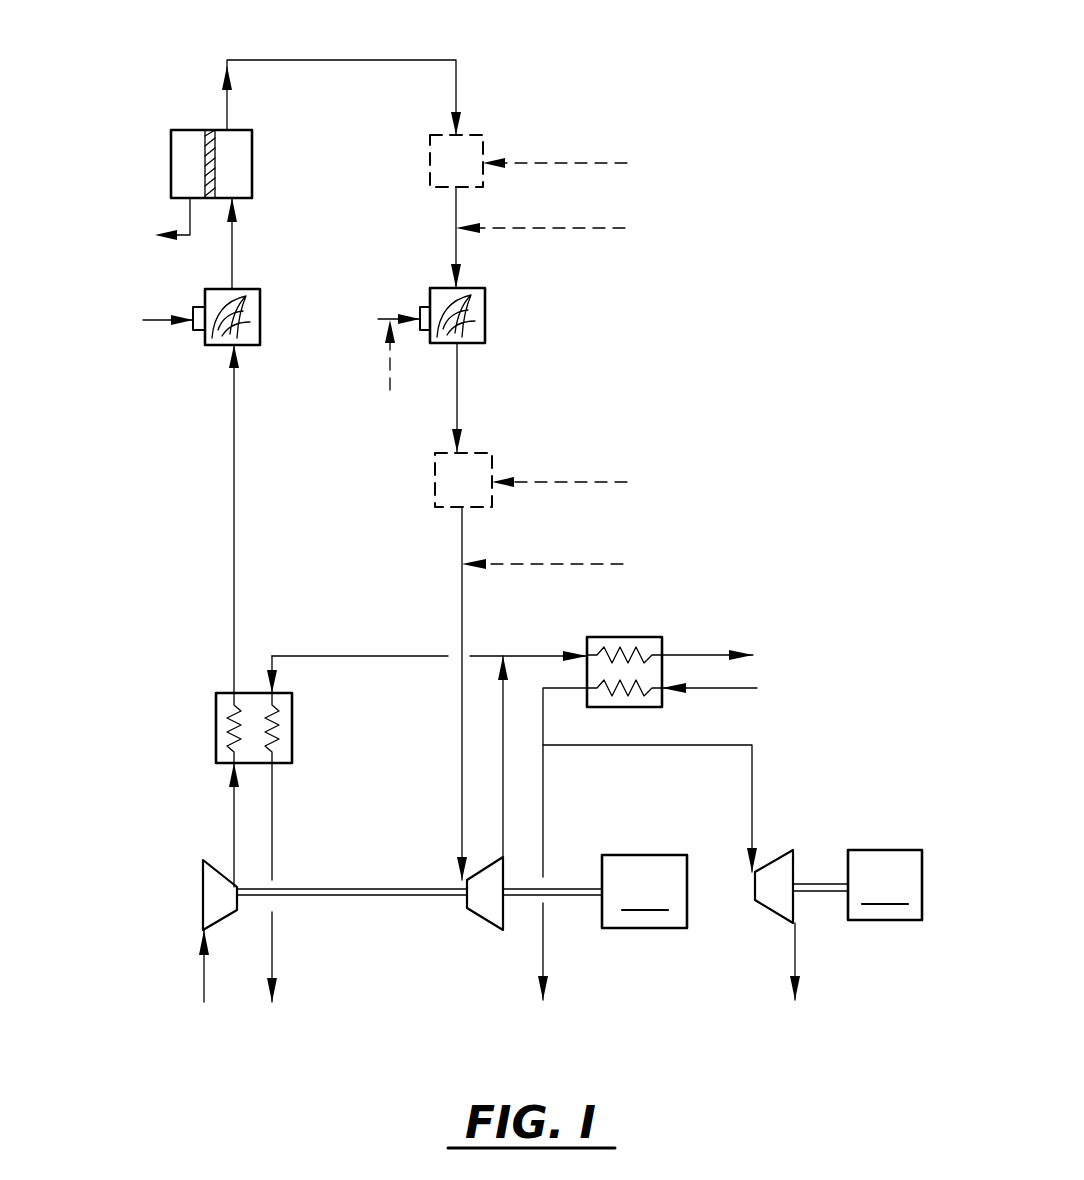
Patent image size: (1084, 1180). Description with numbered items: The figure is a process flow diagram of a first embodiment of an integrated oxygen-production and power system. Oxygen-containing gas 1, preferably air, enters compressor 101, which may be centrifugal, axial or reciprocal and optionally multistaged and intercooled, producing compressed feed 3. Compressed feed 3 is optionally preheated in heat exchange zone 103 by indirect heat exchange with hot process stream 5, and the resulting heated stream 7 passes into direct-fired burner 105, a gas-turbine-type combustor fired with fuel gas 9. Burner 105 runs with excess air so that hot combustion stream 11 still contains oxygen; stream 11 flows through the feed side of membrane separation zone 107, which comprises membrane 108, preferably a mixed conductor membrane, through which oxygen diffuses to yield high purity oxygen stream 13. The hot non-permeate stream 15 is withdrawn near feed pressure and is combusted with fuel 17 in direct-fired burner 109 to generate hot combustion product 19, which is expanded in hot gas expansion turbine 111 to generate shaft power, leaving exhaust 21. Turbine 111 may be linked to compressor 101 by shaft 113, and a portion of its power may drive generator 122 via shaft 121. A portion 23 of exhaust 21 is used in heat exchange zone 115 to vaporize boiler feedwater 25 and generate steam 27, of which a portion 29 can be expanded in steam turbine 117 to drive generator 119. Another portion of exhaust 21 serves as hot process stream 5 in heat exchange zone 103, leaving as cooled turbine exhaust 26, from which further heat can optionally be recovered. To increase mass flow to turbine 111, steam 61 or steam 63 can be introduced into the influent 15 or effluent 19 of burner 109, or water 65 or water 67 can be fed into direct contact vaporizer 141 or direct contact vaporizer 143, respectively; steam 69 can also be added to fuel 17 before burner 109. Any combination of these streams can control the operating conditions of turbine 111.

The oxygen-containing gas 1 is at (204, 968).
The compressed feed 3 is at (234, 808).
The hot process stream 5 is at (362, 656).
The heated stream 7 is at (234, 612).
The fuel gas 9 is at (165, 320).
The hot combustion stream 11 is at (232, 235).
The high purity oxygen stream 13 is at (190, 236).
The hot non-permeate stream 15 is at (345, 60).
The fuel 17 is at (378, 318).
The hot combustion product 19 is at (458, 398).
The exhaust 21 is at (503, 755).
The portion of turbine exhaust 23 is at (548, 656).
The boiler feedwater 25 is at (735, 688).
The cooled turbine exhaust 26 is at (278, 788).
The steam 27 is at (543, 815).
The portion of steam 29 is at (752, 808).
The steam 61 is at (540, 228).
The steam 63 is at (573, 564).
The water 65 is at (592, 163).
The water 67 is at (588, 482).
The steam 69 is at (390, 365).
The compressor 101 is at (203, 880).
The heat exchange zone 103 is at (292, 735).
The direct-fired burner 105 is at (260, 322).
The membrane separation zone 107 is at (252, 157).
The membrane 108 is at (205, 150).
The direct-fired burner 109 is at (485, 313).
The hot gas expansion turbine 111 is at (467, 905).
The shaft 113 is at (383, 889).
The heat exchange zone 115 is at (655, 637).
The steam turbine 117 is at (790, 850).
The generator 119 is at (857, 885).
The shaft 121 is at (577, 896).
The generator 122 is at (595, 891).
The direct contact vaporizer 141 is at (430, 170).
The direct contact vaporizer 143 is at (435, 478).